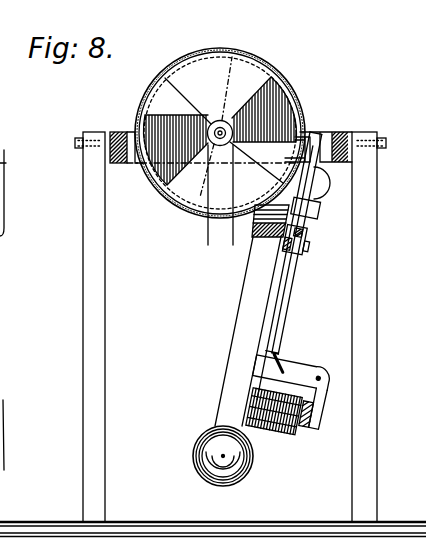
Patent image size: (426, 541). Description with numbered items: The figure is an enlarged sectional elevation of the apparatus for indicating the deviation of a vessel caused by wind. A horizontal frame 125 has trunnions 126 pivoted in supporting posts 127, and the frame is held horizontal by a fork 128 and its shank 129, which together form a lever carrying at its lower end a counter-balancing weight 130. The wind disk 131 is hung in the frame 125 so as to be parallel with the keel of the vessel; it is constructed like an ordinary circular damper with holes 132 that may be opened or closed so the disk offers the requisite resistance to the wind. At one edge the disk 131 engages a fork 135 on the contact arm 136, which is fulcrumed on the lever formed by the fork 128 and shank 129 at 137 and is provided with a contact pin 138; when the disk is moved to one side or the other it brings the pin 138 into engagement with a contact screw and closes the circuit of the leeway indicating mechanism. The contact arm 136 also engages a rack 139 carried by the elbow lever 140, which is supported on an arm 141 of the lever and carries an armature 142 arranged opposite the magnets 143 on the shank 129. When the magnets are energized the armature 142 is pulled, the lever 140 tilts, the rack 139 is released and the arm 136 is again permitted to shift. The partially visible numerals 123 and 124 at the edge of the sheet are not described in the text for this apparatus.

The frame member 123 is at (7, 144).
The frame member 124 is at (7, 244).
The horizontal frame 125 is at (132, 164).
The trunnions 126 is at (75, 143).
The supporting posts 127 is at (105, 403).
The fork 128 is at (256, 238).
The shank 129 is at (232, 383).
The counter-balancing weight 130 is at (246, 468).
The wind disk 131 is at (189, 208).
The holes 132 is at (204, 118).
The fork 135 is at (310, 133).
The contact arm 136 is at (306, 232).
The fulcrum 137 is at (309, 244).
The contact pin 138 is at (331, 184).
The rack 139 is at (285, 359).
The elbow lever 140 is at (334, 382).
The arm 141 is at (327, 392).
The armature 142 is at (307, 420).
The magnets 143 is at (272, 422).